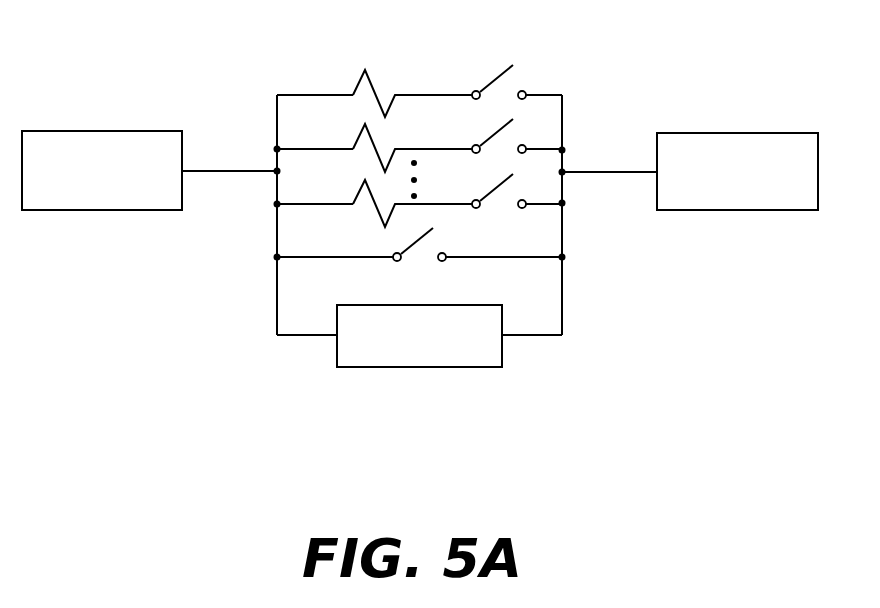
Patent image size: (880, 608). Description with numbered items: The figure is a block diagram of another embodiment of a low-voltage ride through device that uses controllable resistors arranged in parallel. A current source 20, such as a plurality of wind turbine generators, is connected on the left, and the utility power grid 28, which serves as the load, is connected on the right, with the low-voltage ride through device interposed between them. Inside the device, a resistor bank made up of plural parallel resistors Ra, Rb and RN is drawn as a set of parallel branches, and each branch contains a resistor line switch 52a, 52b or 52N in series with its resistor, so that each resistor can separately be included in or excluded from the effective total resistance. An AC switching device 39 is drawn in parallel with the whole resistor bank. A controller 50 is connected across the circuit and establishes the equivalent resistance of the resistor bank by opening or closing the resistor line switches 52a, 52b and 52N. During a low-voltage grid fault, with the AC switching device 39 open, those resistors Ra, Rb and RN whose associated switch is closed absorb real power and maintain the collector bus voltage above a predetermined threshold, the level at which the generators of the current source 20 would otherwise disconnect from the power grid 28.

The current source 20 is at (103, 212).
The power grid 28 is at (741, 212).
The controller 50 is at (410, 368).
The AC switching device 39 is at (420, 262).
The resistor line switch 52a is at (521, 83).
The resistor line switch 52b is at (520, 129).
The resistor line switch 52N is at (523, 190).
The resistor Ra is at (375, 87).
The resistor Rb is at (360, 138).
The resistor RN is at (362, 190).